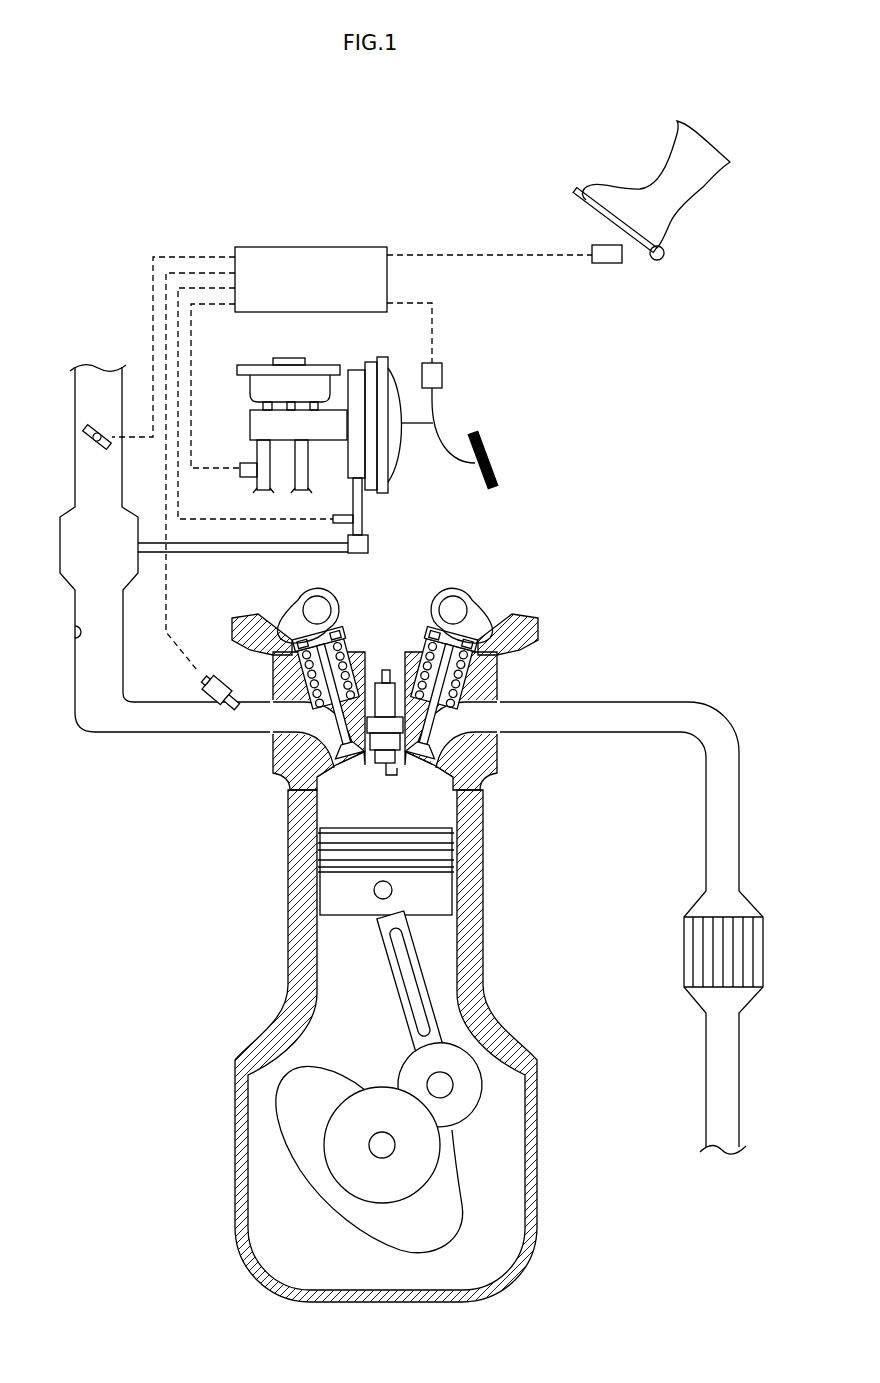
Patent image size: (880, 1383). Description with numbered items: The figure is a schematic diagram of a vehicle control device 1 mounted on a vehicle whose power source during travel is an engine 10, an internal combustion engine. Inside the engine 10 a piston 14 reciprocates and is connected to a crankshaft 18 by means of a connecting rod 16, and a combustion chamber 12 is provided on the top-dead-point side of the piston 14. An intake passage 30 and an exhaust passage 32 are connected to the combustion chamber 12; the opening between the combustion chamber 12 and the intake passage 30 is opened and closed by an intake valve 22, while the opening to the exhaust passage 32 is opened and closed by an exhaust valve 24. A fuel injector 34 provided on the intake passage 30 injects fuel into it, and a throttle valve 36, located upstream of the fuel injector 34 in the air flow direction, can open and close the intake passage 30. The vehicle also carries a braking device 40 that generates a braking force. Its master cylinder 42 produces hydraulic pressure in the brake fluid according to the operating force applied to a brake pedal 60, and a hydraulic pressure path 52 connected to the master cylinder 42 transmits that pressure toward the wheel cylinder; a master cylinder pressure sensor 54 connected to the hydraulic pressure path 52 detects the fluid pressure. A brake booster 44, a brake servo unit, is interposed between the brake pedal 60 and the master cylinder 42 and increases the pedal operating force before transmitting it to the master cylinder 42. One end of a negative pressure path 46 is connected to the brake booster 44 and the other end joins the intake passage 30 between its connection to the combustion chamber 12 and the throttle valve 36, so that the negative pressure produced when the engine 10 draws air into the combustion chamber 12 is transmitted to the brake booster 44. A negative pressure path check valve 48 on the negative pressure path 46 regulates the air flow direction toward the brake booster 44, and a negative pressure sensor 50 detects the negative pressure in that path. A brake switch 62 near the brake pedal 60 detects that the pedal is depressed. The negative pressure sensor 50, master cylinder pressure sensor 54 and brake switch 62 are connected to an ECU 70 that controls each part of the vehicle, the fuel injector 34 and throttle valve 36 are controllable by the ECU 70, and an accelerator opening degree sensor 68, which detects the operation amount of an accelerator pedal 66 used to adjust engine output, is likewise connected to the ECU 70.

The vehicle control device 1 is at (178, 236).
The engine 10 is at (288, 952).
The combustion chamber 12 is at (324, 778).
The piston 14 is at (356, 918).
The connecting rod 16 is at (390, 985).
The crankshaft 18 is at (338, 1185).
The intake valve 22 is at (380, 775).
The exhaust valve 24 is at (428, 770).
The intake passage 30 is at (72, 631).
The exhaust passage 32 is at (614, 700).
The fuel injector 34 is at (200, 686).
The throttle valve 36 is at (84, 432).
The braking device 40 is at (371, 483).
The master cylinder 42 is at (250, 420).
The brake booster 44 is at (386, 493).
The negative pressure path 46 is at (242, 553).
The negative pressure path check valve 48 is at (360, 553).
The negative pressure sensor 50 is at (340, 515).
The hydraulic pressure path 52 is at (298, 462).
The master cylinder pressure sensor 54 is at (243, 478).
The brake pedal 60 is at (494, 445).
The brake switch 62 is at (443, 377).
The accelerator pedal 66 is at (576, 194).
The accelerator opening degree sensor 68 is at (607, 263).
The ECU 70 is at (345, 247).